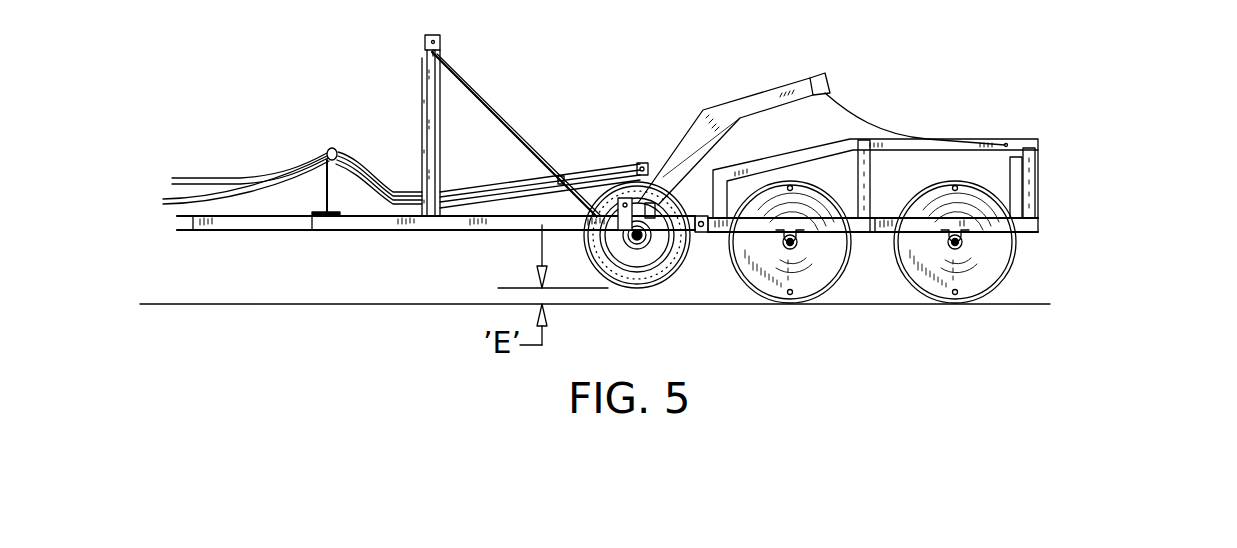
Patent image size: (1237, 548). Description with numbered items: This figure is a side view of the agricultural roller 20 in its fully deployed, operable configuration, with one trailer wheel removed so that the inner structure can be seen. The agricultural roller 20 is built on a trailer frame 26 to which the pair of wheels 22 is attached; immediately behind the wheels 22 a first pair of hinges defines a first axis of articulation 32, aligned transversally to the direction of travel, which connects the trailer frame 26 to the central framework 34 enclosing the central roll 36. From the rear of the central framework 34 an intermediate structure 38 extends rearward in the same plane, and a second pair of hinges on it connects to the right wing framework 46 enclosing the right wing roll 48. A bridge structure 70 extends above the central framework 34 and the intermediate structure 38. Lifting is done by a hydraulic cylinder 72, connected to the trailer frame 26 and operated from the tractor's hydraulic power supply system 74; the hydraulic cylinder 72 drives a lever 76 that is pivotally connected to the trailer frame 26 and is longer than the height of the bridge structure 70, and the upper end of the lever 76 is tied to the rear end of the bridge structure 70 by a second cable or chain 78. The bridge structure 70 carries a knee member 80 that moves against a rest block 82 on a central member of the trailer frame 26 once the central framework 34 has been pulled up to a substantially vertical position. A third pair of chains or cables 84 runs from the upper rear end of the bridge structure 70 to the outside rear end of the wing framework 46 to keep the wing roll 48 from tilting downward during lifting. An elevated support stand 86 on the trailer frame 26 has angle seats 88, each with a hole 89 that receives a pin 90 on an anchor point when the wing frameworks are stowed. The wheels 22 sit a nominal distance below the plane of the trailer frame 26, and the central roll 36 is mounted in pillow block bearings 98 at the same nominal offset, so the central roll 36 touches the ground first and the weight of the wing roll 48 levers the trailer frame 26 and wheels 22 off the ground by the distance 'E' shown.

The agricultural roller 20 is at (1080, 93).
The wheels 22 is at (660, 283).
The trailer frame 26 is at (258, 232).
The first axis of articulation 32 is at (702, 227).
The central framework 34 is at (842, 250).
The central roll 36 is at (807, 267).
The intermediate structure 38 is at (921, 245).
The right wing framework 46 is at (1020, 228).
The right wing roll 48 is at (958, 273).
The bridge structure 70 is at (916, 150).
The hydraulic cylinder 72 is at (480, 185).
The hydraulic power supply system 74 is at (227, 177).
The lever 76 is at (757, 100).
The second cable or chain 78 is at (868, 126).
The knee member 80 is at (705, 187).
The rest block 82 is at (661, 170).
The third pair of chains or cables 84 is at (1040, 175).
The elevated support stand 86 is at (430, 115).
The angle seats 88 is at (425, 42).
The hole 89 is at (440, 42).
The pin 90 is at (883, 213).
The pillow block bearings 98 is at (943, 248).